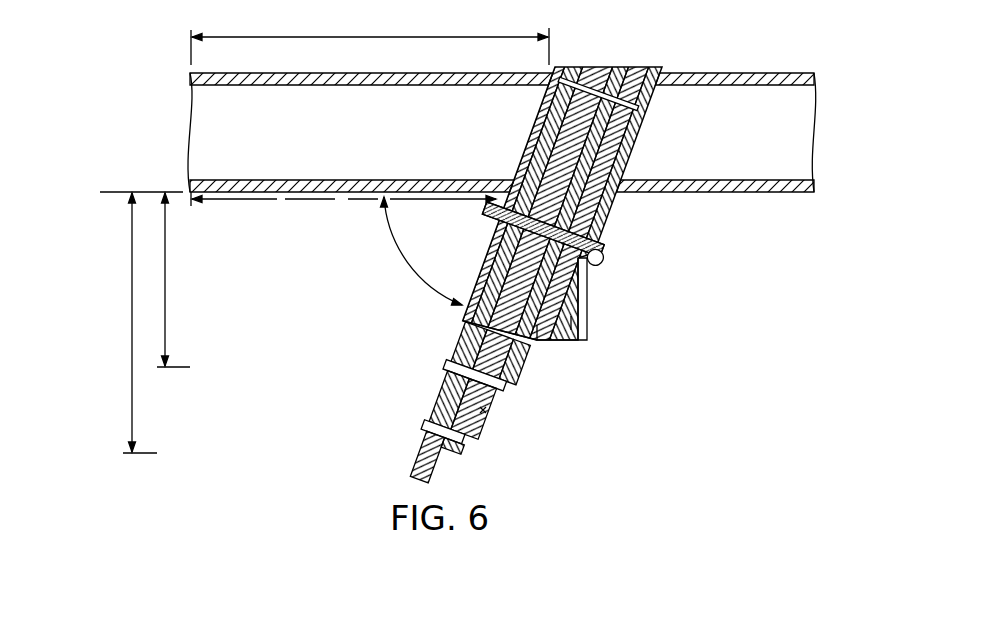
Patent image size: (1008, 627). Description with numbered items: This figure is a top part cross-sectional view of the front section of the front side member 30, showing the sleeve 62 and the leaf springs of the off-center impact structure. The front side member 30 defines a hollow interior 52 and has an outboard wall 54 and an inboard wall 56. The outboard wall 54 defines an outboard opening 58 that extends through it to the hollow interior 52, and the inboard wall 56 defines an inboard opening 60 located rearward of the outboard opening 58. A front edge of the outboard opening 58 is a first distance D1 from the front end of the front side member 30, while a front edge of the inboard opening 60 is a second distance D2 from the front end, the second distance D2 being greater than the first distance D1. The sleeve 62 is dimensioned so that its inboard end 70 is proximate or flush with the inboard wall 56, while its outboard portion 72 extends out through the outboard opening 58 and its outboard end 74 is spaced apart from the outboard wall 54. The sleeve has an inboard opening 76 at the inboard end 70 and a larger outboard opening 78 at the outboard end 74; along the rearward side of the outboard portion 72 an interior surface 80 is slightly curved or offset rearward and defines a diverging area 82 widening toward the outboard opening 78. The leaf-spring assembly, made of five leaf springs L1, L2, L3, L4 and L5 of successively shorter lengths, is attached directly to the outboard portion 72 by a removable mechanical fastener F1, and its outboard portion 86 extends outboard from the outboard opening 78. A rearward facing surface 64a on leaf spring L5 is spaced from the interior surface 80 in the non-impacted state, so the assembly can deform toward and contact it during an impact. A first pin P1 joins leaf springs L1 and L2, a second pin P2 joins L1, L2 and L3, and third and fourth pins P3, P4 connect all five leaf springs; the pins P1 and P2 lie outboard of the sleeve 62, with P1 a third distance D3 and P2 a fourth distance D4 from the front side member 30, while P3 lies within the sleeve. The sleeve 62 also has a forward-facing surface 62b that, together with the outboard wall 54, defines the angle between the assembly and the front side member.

The front side member 30 is at (382, 72).
The hollow interior 52 is at (757, 143).
The outboard wall 54 is at (344, 193).
The inboard wall 56 is at (753, 72).
The outboard opening 58 is at (630, 158).
The inboard opening 60 is at (650, 67).
The sleeve 62 is at (618, 210).
The forward-facing surface 62b is at (483, 278).
The rearward facing surface 64a is at (570, 340).
The inboard end 70 is at (557, 67).
The outboard portion 72 is at (607, 229).
The outboard end 74 is at (462, 322).
The inboard opening 76 is at (590, 67).
The outboard opening 78 is at (578, 340).
The interior surface 80 is at (579, 293).
The diverging area 82 is at (571, 322).
The outboard portion 86 is at (482, 430).
The first pin P1 is at (428, 427).
The second pin P2 is at (447, 372).
The third pin P3 is at (493, 240).
The fourth pin P4 is at (613, 67).
The mechanical fastener F1 is at (605, 259).
The leaf spring L1 is at (430, 472).
The leaf spring L2 is at (458, 446).
The leaf spring L3 is at (485, 410).
The leaf spring L4 is at (517, 370).
The leaf spring L5 is at (540, 340).
The first distance D1 is at (281, 206).
The second distance D2 is at (337, 37).
The third distance D3 is at (131, 350).
The fourth distance D4 is at (167, 292).